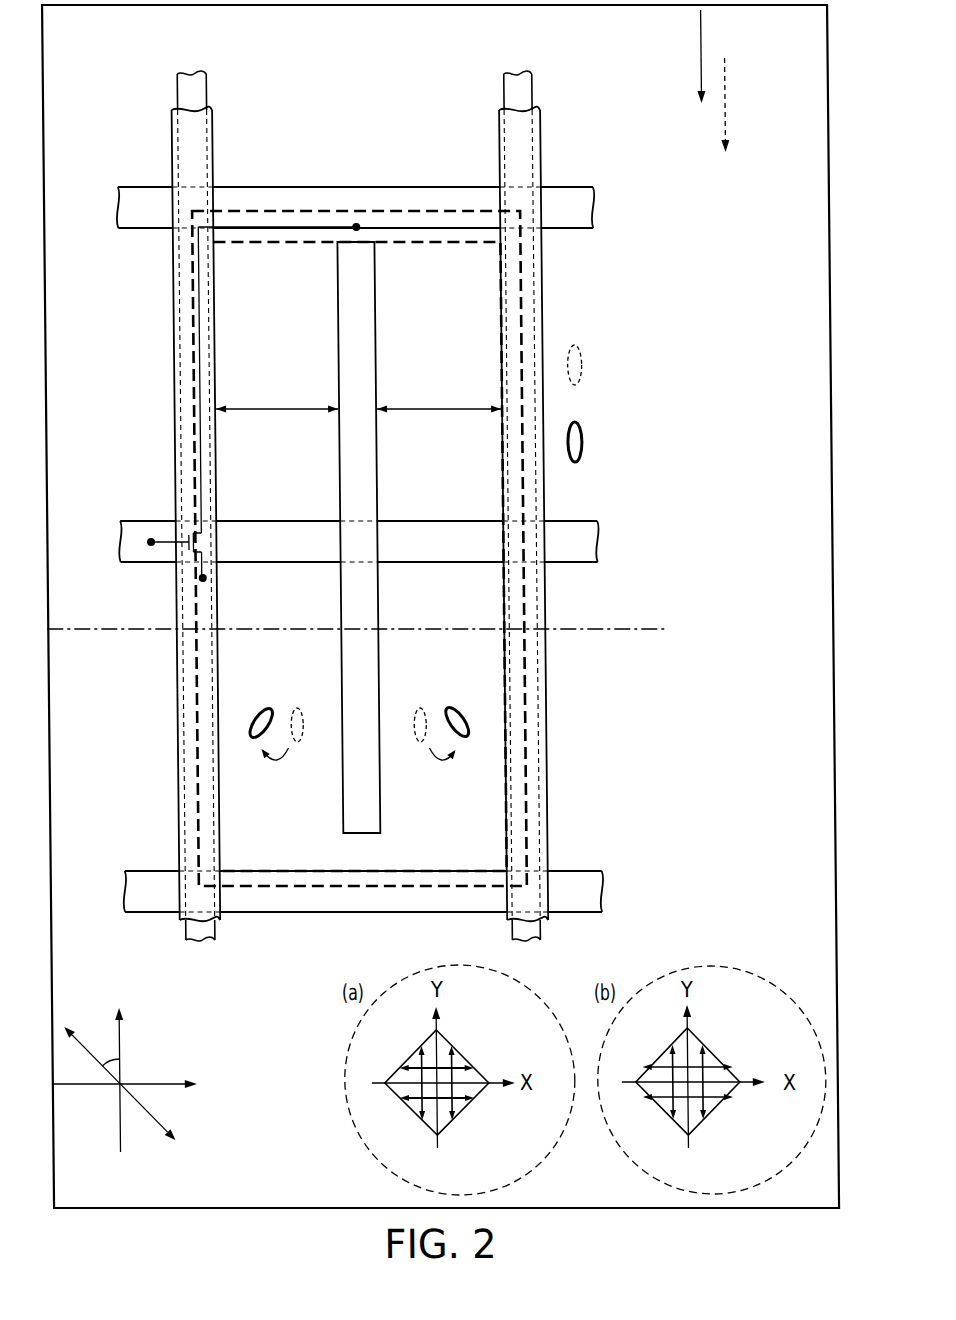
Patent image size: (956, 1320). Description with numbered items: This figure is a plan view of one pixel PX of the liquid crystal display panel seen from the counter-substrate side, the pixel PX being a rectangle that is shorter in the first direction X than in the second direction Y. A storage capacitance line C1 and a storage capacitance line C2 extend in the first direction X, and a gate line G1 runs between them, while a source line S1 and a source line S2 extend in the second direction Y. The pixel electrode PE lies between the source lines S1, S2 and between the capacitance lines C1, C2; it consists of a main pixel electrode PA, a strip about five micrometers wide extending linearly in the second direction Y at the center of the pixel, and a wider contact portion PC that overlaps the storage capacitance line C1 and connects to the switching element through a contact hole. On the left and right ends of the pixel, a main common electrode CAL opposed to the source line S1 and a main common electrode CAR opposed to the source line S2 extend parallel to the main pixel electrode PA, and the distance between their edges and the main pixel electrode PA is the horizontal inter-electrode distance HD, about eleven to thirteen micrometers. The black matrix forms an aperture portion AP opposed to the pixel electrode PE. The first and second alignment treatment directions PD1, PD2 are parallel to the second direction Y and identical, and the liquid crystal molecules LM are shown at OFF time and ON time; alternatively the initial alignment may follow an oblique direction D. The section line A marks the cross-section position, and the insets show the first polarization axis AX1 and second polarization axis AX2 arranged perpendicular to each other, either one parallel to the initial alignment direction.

The source line S1 is at (190, 85).
The source line S2 is at (517, 85).
The gate line G1 is at (596, 538).
The storage capacitance line C1 is at (596, 205).
The storage capacitance line C2 is at (598, 890).
The main common electrode CAL is at (170, 440).
The main common electrode CAR is at (539, 284).
The pixel electrode PE is at (398, 363).
The main pixel electrode PA is at (356, 467).
The contact portion PC is at (309, 200).
The horizontal inter-electrode distance HD is at (358, 397).
The pixel PX is at (540, 712).
The aperture portion AP is at (499, 785).
The first alignment treatment direction PD1 is at (658, 56).
The second alignment treatment direction PD2 is at (768, 105).
The liquid crystal molecule LM is at (681, 411).
The section line A is at (356, 618).
The oblique direction D is at (79, 1050).
The first polarization axis AX1 is at (451, 1098).
The second polarization axis AX2 is at (442, 1057).